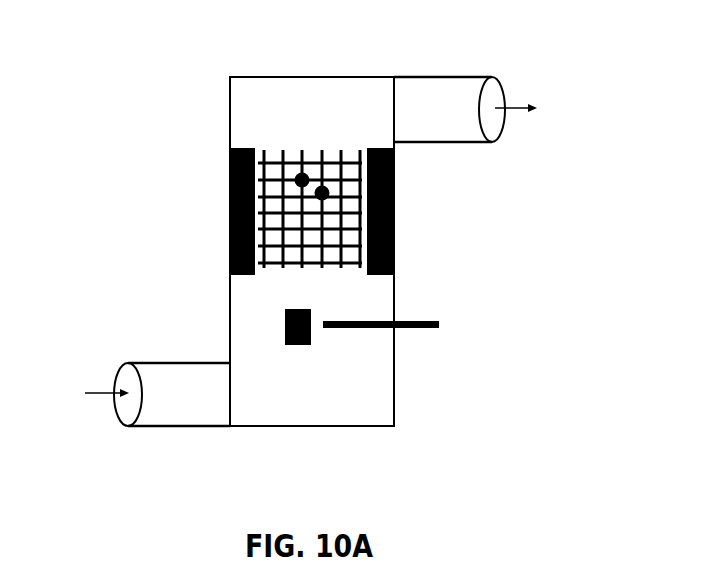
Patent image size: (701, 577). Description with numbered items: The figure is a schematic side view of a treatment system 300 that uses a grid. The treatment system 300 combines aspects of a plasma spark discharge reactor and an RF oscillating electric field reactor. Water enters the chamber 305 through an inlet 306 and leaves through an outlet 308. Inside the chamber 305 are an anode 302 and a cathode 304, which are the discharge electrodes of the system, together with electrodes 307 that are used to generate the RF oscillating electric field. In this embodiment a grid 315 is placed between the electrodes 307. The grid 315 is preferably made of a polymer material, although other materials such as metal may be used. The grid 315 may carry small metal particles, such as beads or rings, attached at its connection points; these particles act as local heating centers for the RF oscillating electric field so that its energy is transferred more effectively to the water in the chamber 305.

The treatment system 300 is at (161, 150).
The anode 302 is at (392, 317).
The cathode 304 is at (297, 345).
The chamber 305 is at (300, 107).
The inlet 306 is at (127, 410).
The electrodes 307 is at (230, 238).
The outlet 308 is at (493, 95).
The grid 315 is at (322, 185).